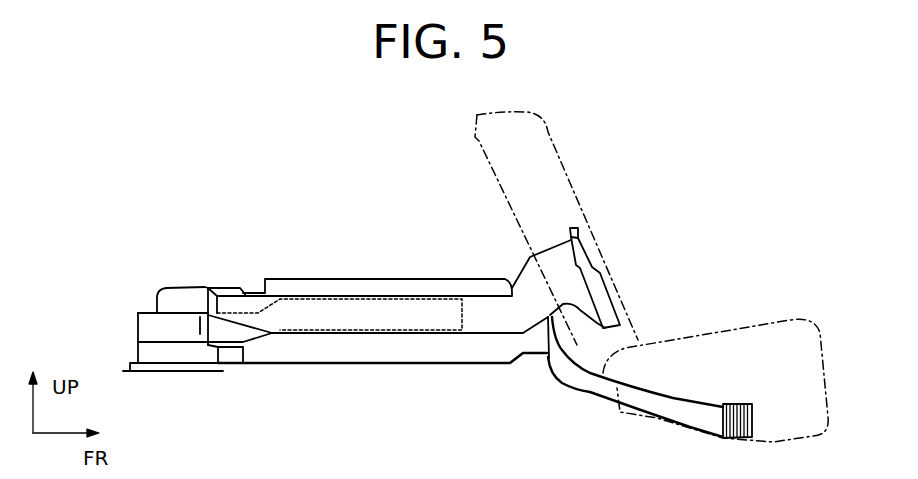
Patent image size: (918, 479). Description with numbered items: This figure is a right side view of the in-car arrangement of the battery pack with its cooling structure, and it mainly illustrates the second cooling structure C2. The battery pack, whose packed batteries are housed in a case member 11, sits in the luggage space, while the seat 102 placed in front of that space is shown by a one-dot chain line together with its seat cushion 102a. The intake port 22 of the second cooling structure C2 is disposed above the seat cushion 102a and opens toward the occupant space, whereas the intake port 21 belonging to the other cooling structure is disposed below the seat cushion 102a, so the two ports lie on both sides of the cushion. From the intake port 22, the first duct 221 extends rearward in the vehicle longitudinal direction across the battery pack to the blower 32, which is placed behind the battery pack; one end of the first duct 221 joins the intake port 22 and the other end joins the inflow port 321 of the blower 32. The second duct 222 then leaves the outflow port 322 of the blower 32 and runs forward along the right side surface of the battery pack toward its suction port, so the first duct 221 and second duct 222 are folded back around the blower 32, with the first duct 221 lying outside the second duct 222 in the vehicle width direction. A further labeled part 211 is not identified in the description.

The case member 11 is at (379, 267).
The second cooling structure C2 is at (211, 277).
The inflow port 321 is at (155, 311).
The blower 32 is at (127, 348).
The outflow port 322 is at (233, 333).
The first duct 221 is at (482, 333).
The second duct 222 is at (415, 333).
The intake port 22 is at (603, 278).
The arm portion 211 is at (572, 376).
The intake port 21 is at (753, 415).
The seat 102 is at (574, 166).
The seat cushion 102a is at (736, 325).